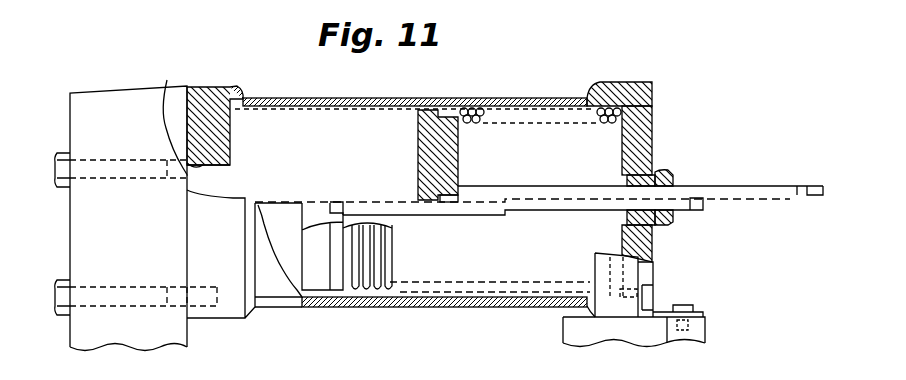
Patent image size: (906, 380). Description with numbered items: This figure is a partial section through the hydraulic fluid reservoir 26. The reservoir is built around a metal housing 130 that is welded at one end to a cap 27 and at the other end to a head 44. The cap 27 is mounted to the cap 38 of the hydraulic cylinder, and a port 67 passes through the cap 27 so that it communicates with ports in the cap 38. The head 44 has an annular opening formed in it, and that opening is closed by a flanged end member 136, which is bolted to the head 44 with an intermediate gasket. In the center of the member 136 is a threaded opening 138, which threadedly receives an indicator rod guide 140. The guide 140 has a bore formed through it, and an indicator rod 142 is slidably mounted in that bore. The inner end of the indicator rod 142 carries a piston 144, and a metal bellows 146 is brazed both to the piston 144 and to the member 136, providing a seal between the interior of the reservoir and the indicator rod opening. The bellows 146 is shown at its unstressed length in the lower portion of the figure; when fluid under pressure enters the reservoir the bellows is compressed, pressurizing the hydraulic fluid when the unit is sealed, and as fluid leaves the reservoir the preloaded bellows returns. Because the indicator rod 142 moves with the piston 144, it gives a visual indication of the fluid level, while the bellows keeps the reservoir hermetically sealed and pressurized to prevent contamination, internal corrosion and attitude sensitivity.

The hydraulic fluid reservoir 26 is at (378, 90).
The cap 27 is at (226, 80).
The cap 38 is at (70, 228).
The head 44 is at (612, 84).
The port 67 is at (175, 119).
The metal housing 130 is at (287, 92).
The flanged end member 136 is at (648, 95).
The threaded opening 138 is at (655, 178).
The indicator rod guide 140 is at (678, 172).
The indicator rod 142 is at (745, 184).
The piston 144 is at (435, 115).
The metal bellows 146 is at (478, 124).